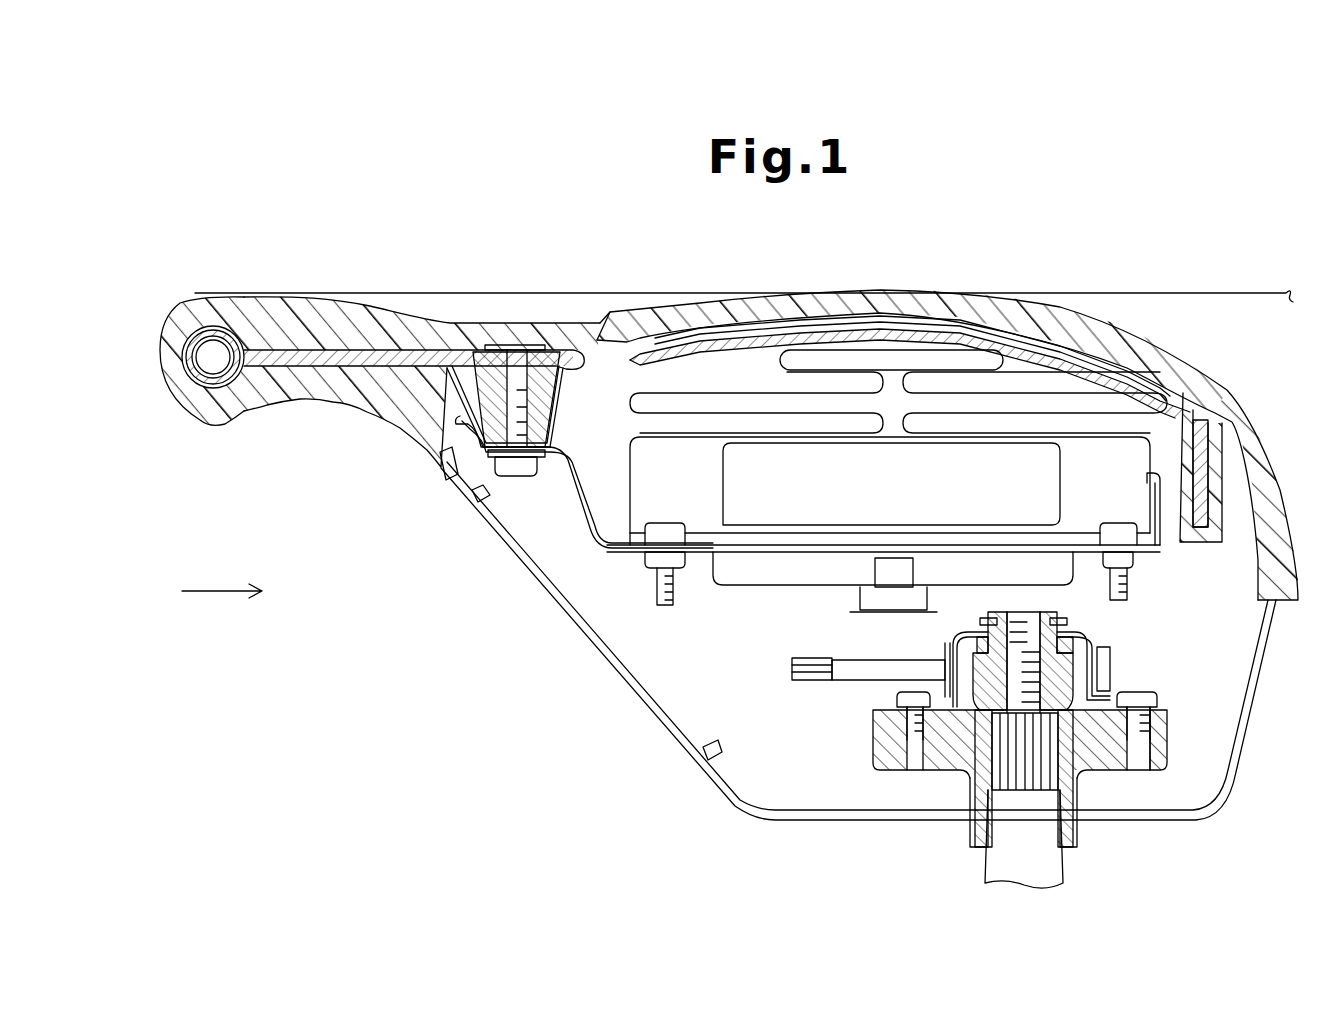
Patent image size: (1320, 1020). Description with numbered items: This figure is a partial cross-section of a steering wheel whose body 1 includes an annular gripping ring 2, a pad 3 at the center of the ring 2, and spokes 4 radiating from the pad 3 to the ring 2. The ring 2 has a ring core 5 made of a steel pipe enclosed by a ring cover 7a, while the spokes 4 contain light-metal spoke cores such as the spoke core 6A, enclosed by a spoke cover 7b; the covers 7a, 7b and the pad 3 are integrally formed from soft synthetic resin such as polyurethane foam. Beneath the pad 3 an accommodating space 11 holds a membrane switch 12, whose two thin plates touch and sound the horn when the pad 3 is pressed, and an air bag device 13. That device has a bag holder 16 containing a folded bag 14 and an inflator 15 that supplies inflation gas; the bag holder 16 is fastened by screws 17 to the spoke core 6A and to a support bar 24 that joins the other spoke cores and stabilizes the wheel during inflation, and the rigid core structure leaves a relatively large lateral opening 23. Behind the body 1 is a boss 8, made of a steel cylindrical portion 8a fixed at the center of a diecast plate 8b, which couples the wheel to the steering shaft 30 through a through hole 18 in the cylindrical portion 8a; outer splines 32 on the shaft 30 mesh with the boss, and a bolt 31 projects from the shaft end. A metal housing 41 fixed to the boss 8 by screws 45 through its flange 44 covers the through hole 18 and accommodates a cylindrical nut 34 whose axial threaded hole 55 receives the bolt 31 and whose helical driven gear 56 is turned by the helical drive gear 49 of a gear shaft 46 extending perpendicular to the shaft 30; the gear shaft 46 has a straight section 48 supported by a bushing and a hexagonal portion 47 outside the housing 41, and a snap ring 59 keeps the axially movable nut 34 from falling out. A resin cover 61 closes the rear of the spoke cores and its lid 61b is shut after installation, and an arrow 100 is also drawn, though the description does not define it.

The steering wheel body 1 is at (1217, 256).
The gripping ring 2 is at (200, 301).
The pad 3 is at (1053, 303).
The spokes 4 is at (441, 322).
The ring core 5 is at (233, 304).
The spoke core 6A is at (366, 320).
The ring cover 7a is at (205, 414).
The spoke cover 7b is at (352, 398).
The boss 8 is at (956, 786).
The cylindrical portion 8a is at (1078, 832).
The plate 8b is at (1168, 742).
The accommodating space 11 is at (683, 381).
The membrane switch 12 is at (752, 346).
The air bag device 13 is at (615, 441).
The bag 14 is at (630, 392).
The inflator 15 is at (723, 480).
The bag holder 16 is at (577, 510).
The screws 17 is at (512, 472).
The through hole 18 is at (1060, 760).
The lateral opening 23 is at (620, 643).
The support bar 24 is at (1200, 480).
The steering shaft 30 is at (1067, 872).
The bolt 31 is at (1025, 620).
The outer splines 32 is at (975, 790).
The nut 34 is at (1050, 615).
The housing 41 is at (1085, 640).
The flange 44 is at (895, 706).
The screws 45 is at (912, 740).
The gear shaft 46 is at (768, 654).
The hexagonal portion 47 is at (803, 683).
The straight section 48 is at (840, 660).
The drive gear 49 is at (977, 645).
The threaded hole 55 is at (1005, 620).
The driven gear 56 is at (1108, 676).
The snap ring 59 is at (985, 615).
The resin cover 61 is at (463, 498).
The lid 61b is at (665, 728).
The forward direction 100 is at (214, 593).